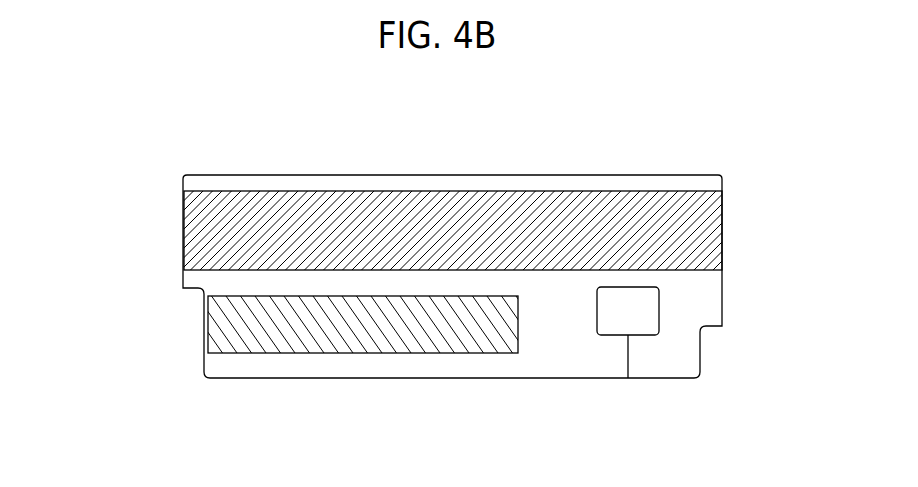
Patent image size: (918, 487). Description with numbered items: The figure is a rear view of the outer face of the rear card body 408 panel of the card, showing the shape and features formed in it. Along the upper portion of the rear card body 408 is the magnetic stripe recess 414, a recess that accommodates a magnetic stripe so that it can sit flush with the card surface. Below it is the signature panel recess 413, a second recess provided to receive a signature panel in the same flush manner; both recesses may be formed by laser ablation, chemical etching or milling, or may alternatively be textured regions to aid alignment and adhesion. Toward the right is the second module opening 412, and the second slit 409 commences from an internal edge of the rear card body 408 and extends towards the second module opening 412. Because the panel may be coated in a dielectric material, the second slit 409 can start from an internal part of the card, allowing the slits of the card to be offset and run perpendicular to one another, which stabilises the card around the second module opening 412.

The rear card body 408 is at (332, 175).
The magnetic stripe recess 414 is at (207, 238).
The signature panel recess 413 is at (275, 349).
The second slit 409 is at (628, 376).
The second module opening 412 is at (637, 318).